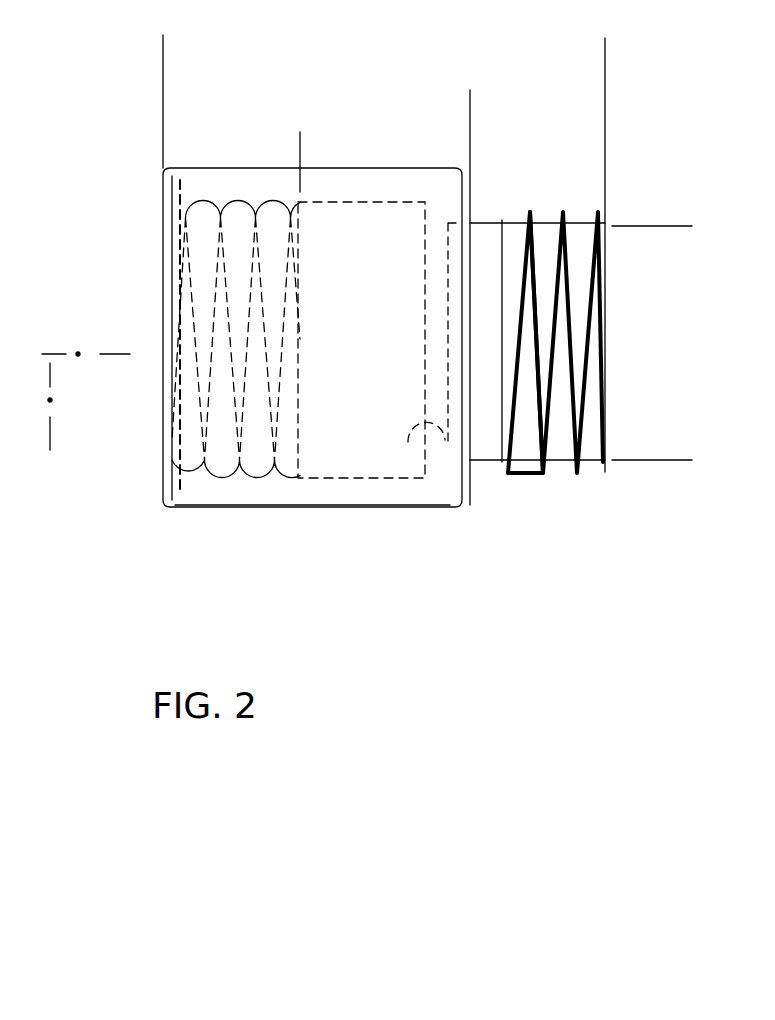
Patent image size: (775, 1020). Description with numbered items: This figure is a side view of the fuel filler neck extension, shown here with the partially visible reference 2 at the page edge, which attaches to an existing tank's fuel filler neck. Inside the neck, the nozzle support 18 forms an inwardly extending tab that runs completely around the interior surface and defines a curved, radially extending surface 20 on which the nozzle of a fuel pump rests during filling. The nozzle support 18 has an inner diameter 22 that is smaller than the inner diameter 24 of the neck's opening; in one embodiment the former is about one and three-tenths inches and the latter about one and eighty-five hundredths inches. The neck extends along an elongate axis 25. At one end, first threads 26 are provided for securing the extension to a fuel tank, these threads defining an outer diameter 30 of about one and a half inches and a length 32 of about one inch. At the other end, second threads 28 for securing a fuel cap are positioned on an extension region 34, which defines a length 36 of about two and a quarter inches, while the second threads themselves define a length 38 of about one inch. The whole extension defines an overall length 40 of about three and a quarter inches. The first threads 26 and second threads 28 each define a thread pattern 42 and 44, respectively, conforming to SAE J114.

The coupling assembly 2 is at (5, 241).
The nozzle support 18 is at (462, 508).
The curved, radially extending surface 20 is at (402, 507).
The inner diameter 22 is at (440, 241).
The inner diameter 24 is at (362, 204).
The elongate axis 25 is at (75, 425).
The first threads 26 is at (578, 220).
The second threads 28 is at (203, 453).
The outer diameter 30 is at (687, 227).
The length 32 is at (604, 122).
The extension region 34 is at (223, 495).
The length 36 is at (469, 95).
The length 38 is at (299, 138).
The length 40 is at (604, 43).
The thread pattern 42 is at (575, 467).
The thread pattern 44 is at (263, 477).